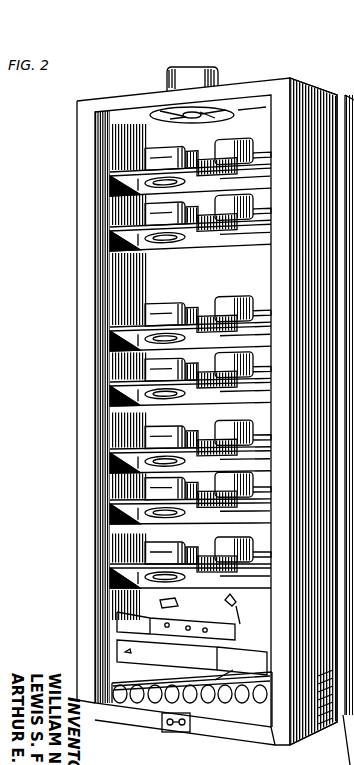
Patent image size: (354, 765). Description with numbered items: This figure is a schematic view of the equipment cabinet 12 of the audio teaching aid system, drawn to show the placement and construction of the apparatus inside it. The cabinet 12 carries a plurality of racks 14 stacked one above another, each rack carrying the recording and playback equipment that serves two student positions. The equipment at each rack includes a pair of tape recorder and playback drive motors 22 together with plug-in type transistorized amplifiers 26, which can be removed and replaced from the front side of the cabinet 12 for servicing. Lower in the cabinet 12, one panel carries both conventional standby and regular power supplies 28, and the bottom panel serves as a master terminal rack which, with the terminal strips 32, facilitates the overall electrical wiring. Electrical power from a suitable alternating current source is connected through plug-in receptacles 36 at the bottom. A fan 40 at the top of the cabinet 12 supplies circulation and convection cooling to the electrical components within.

The equipment cabinet 12 is at (301, 82).
The racks 14 is at (96, 272).
The tape recorder and playback drive motors 22 is at (222, 142).
The transistorized amplifiers 26 is at (218, 192).
The power supplies 28 is at (96, 616).
The terminal strips 32 is at (232, 160).
The plug-in receptacles 36 is at (182, 733).
The fan 40 is at (205, 70).